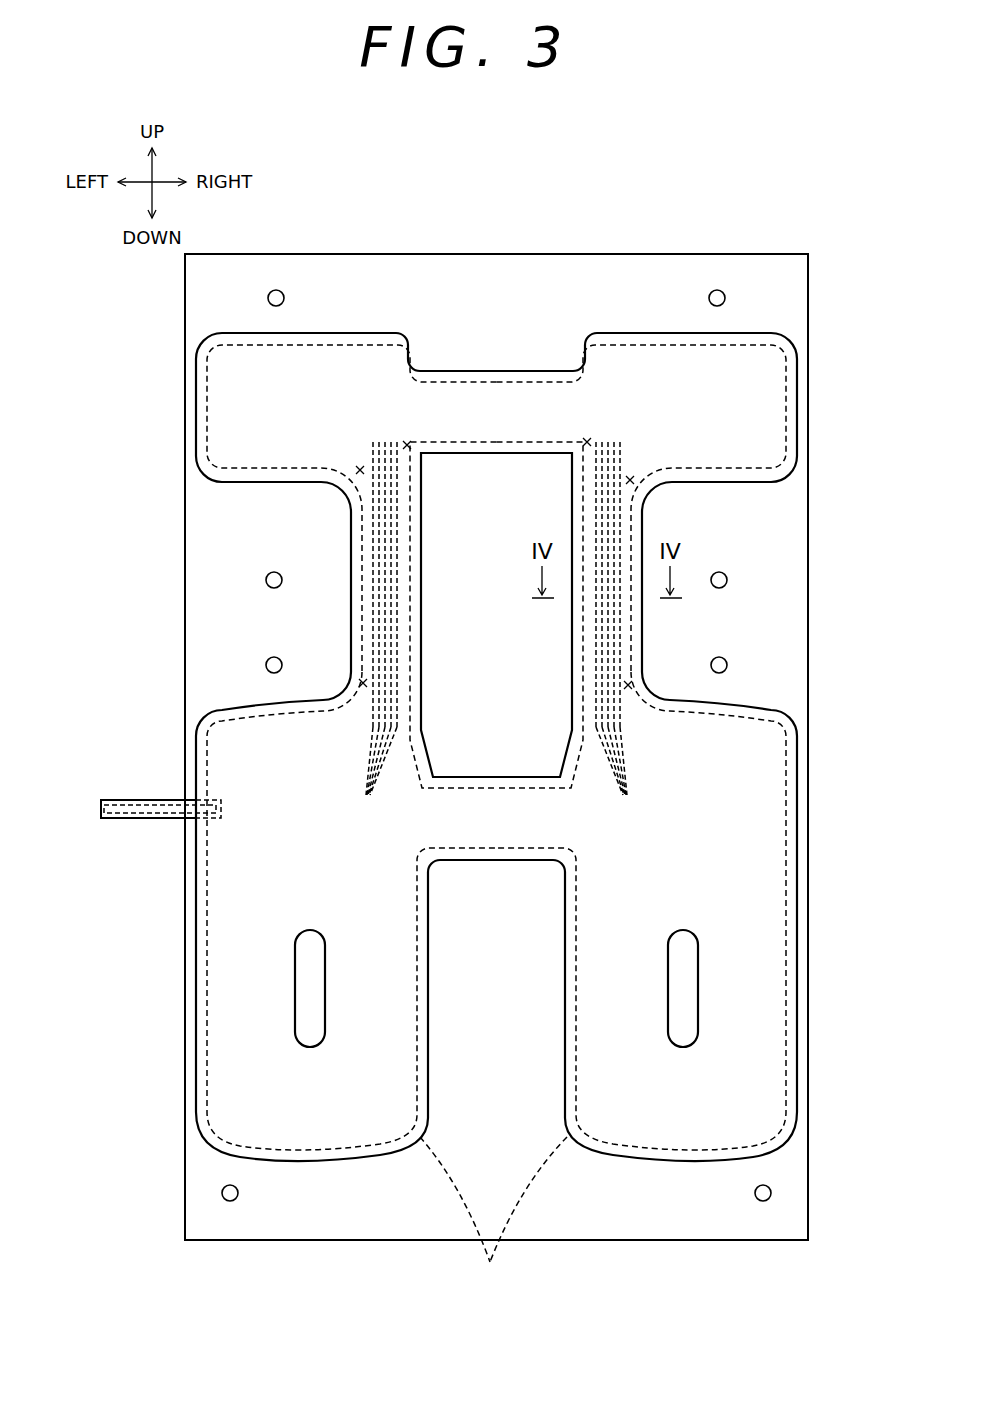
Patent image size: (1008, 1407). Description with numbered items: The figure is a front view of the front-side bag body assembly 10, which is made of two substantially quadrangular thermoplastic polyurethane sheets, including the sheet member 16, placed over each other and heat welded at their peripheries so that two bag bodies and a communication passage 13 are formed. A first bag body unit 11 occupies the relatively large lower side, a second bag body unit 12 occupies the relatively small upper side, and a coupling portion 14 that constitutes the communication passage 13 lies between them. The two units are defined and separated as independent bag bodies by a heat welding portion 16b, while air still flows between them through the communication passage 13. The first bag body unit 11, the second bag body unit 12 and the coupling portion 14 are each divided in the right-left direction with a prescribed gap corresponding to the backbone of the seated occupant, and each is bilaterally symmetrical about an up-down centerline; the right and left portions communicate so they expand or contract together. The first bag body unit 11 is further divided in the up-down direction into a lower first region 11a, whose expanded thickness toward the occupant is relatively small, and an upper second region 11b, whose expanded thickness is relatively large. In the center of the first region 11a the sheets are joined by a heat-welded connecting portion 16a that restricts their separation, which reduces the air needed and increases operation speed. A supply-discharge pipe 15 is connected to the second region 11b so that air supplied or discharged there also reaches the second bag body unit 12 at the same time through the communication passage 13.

The front-side bag body assembly 10 is at (160, 450).
The first bag body unit 11 is at (472, 916).
The first region 11a is at (220, 1020).
The second region 11b is at (236, 850).
The second bag body unit 12 is at (215, 370).
The communication passage 13 is at (360, 470).
The coupling portion 14 is at (351, 610).
The supply-discharge pipe 15 is at (137, 800).
The sheet member 16 is at (488, 474).
The connecting portion 16a is at (295, 968).
The heat welding portion 16b is at (332, 333).